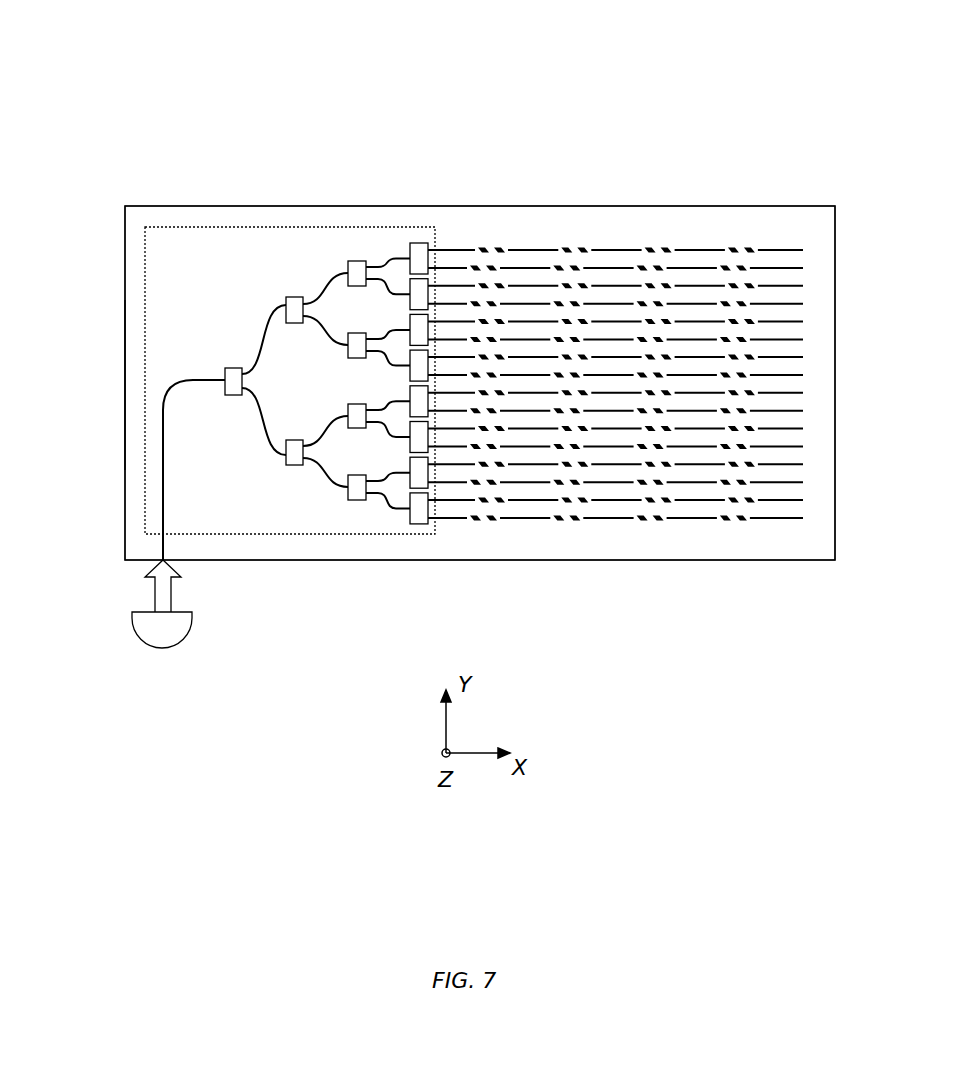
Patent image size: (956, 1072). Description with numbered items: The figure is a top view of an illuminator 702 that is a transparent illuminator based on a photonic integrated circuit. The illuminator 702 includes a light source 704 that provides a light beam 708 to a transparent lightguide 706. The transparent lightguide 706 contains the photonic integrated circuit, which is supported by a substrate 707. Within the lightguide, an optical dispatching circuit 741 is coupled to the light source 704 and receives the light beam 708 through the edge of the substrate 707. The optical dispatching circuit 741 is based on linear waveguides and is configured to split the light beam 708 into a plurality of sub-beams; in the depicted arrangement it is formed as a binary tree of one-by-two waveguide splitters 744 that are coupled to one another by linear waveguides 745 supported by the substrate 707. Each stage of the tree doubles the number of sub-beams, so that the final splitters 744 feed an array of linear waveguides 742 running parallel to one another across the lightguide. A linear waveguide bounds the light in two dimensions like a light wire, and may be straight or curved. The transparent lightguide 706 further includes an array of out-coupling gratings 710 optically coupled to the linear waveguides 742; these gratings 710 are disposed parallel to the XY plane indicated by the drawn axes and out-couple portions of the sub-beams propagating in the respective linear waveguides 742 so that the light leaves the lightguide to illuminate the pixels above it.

The illuminator 702 is at (527, 100).
The light source 704 is at (157, 647).
The transparent lightguide 706 is at (255, 561).
The substrate 707 is at (125, 385).
The light beam 708 is at (155, 593).
The out-coupling gratings 710 is at (495, 248).
The optical dispatching circuit 741 is at (212, 237).
The linear waveguides 742 is at (782, 248).
The 1×2 waveguide splitters 744 is at (362, 262).
The linear waveguides 745 is at (263, 335).